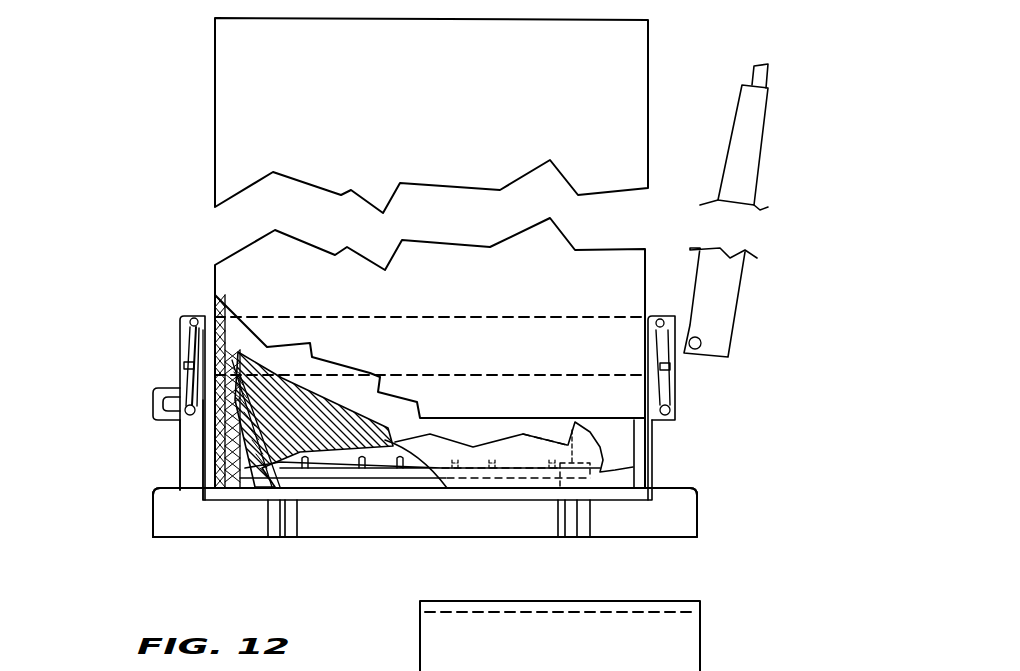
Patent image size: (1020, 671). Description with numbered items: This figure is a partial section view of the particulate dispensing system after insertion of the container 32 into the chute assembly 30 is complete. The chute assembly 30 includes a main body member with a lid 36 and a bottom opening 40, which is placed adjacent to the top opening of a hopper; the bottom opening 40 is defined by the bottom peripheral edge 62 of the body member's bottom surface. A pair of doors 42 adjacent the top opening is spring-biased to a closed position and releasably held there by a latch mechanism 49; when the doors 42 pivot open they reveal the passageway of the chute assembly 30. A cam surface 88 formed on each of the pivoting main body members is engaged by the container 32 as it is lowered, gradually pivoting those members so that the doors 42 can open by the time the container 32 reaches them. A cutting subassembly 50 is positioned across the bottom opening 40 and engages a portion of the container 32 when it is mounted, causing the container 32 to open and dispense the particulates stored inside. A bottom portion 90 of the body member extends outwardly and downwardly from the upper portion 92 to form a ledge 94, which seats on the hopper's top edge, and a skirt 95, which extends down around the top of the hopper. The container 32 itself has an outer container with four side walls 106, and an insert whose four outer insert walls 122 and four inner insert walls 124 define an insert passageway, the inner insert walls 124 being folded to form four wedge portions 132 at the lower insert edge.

The chute assembly 30 is at (170, 420).
The container 32 is at (662, 80).
The lid 36 is at (752, 145).
The bottom opening 40 is at (180, 540).
The doors 42 is at (645, 478).
The latch mechanism 49 is at (193, 333).
The cutting subassembly 50 is at (340, 470).
The bottom peripheral edge 62 is at (160, 535).
The cam surface 88 is at (213, 362).
The bottom portion 90 is at (700, 507).
The upper portion 92 is at (665, 465).
The ledge 94 is at (697, 487).
The skirt 95 is at (698, 527).
The side walls 106 is at (180, 448).
The outer insert walls 122 is at (232, 352).
The inner insert walls 124 is at (265, 372).
The wedge portions 132 is at (225, 478).